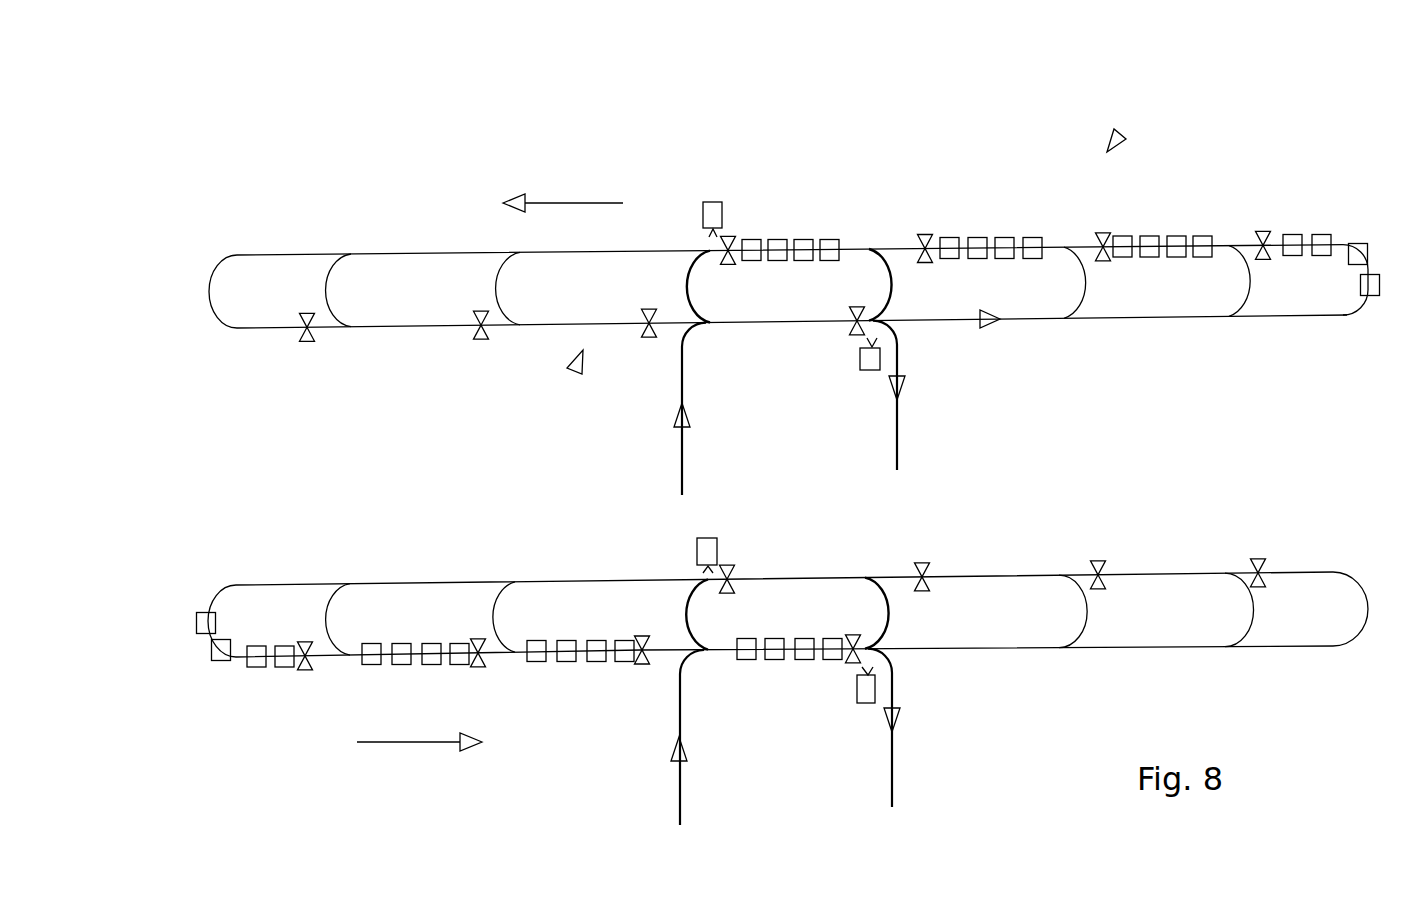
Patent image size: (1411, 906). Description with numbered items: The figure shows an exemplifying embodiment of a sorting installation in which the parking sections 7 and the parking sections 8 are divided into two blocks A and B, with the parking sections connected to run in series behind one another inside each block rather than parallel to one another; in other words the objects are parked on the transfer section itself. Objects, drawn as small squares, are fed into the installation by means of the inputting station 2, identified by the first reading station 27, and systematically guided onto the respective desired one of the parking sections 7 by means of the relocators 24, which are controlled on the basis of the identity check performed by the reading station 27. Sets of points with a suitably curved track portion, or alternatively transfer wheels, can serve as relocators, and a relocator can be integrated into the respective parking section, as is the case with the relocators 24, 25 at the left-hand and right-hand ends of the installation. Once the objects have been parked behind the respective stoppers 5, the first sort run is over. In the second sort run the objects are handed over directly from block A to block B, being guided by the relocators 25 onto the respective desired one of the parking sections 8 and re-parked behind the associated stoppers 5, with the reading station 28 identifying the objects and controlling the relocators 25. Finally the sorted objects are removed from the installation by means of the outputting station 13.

The inputting station 2 is at (680, 457).
The stopper 5 is at (731, 248).
The parking section 7 is at (850, 250).
The parking section 8 is at (255, 328).
The outputting station 13 is at (898, 422).
The relocator 24 is at (910, 247).
The relocator 25 is at (209, 298).
The first reading station 27 is at (862, 368).
The reading station 28 is at (703, 207).
The block A is at (1117, 135).
The block B is at (575, 370).